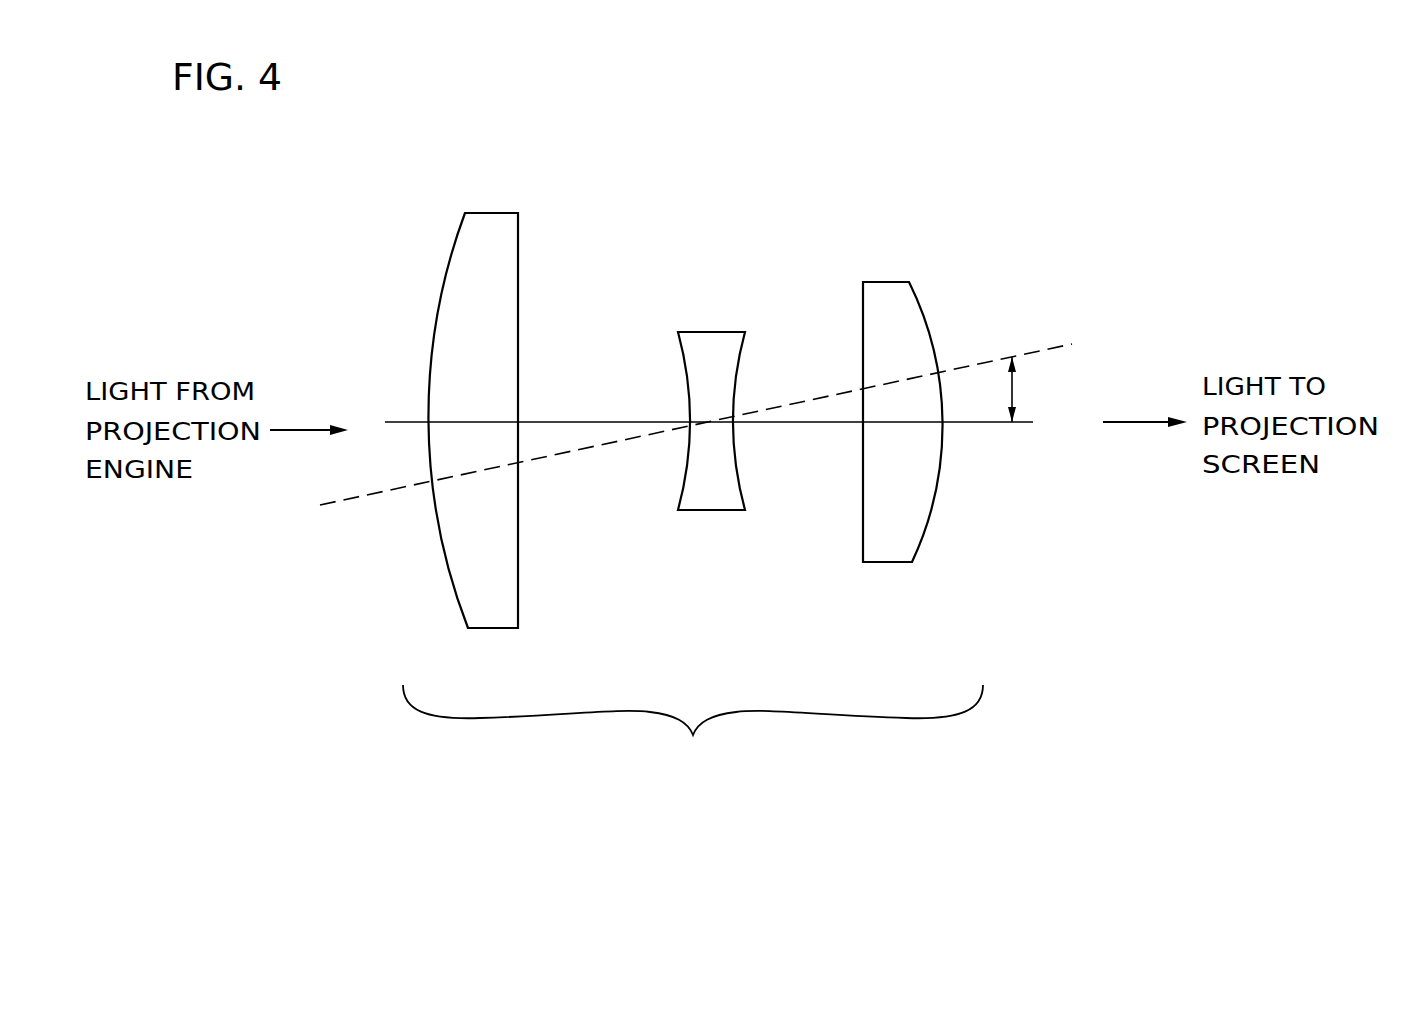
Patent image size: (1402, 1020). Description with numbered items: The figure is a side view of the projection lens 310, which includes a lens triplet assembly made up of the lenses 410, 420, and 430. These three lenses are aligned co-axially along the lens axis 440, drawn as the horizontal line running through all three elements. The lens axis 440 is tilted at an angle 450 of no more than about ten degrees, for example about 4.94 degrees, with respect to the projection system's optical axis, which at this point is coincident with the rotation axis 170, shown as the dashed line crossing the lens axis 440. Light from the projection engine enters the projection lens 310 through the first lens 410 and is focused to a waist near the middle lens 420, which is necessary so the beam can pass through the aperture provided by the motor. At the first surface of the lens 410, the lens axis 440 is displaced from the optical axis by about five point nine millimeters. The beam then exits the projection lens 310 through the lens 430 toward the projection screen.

The lens 410 is at (492, 227).
The lens 420 is at (712, 342).
The lens 430 is at (902, 300).
The lens axis 440 is at (802, 424).
The angle 450 is at (1014, 384).
The rotation axis 170 is at (1050, 347).
The projection lens 310 is at (693, 730).